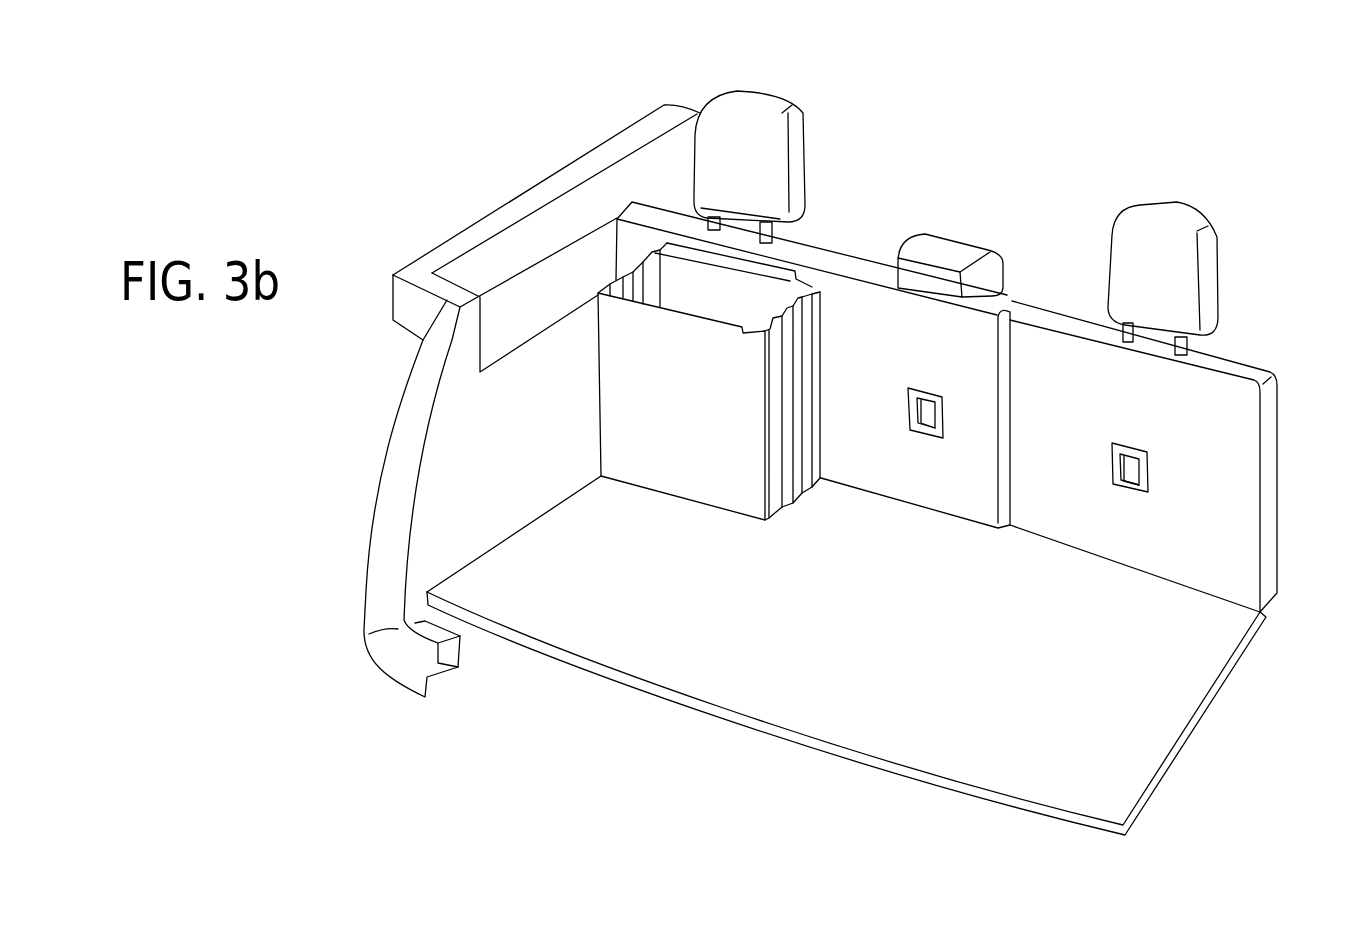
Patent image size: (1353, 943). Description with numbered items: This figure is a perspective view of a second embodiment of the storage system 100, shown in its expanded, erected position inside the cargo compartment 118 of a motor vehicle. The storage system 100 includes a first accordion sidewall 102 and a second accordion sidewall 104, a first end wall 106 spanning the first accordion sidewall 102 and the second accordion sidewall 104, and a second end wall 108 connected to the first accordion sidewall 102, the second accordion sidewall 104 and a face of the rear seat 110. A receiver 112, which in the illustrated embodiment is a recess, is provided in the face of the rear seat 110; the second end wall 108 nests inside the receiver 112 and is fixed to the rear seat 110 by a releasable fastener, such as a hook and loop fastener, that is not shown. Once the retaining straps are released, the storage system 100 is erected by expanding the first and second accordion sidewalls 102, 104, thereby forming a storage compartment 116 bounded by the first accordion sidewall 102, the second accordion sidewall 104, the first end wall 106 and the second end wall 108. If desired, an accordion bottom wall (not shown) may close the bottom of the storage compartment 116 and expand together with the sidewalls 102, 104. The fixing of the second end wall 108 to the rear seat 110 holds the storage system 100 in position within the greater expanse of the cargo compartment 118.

The storage system 100 is at (392, 403).
The first accordion sidewall 102 is at (637, 277).
The second accordion sidewall 104 is at (792, 358).
The first end wall 106 is at (648, 400).
The second end wall 108 is at (728, 297).
The rear seat 110 is at (843, 308).
The receiver 112 is at (773, 275).
The storage compartment 116 is at (697, 290).
The cargo compartment 118 is at (1035, 478).